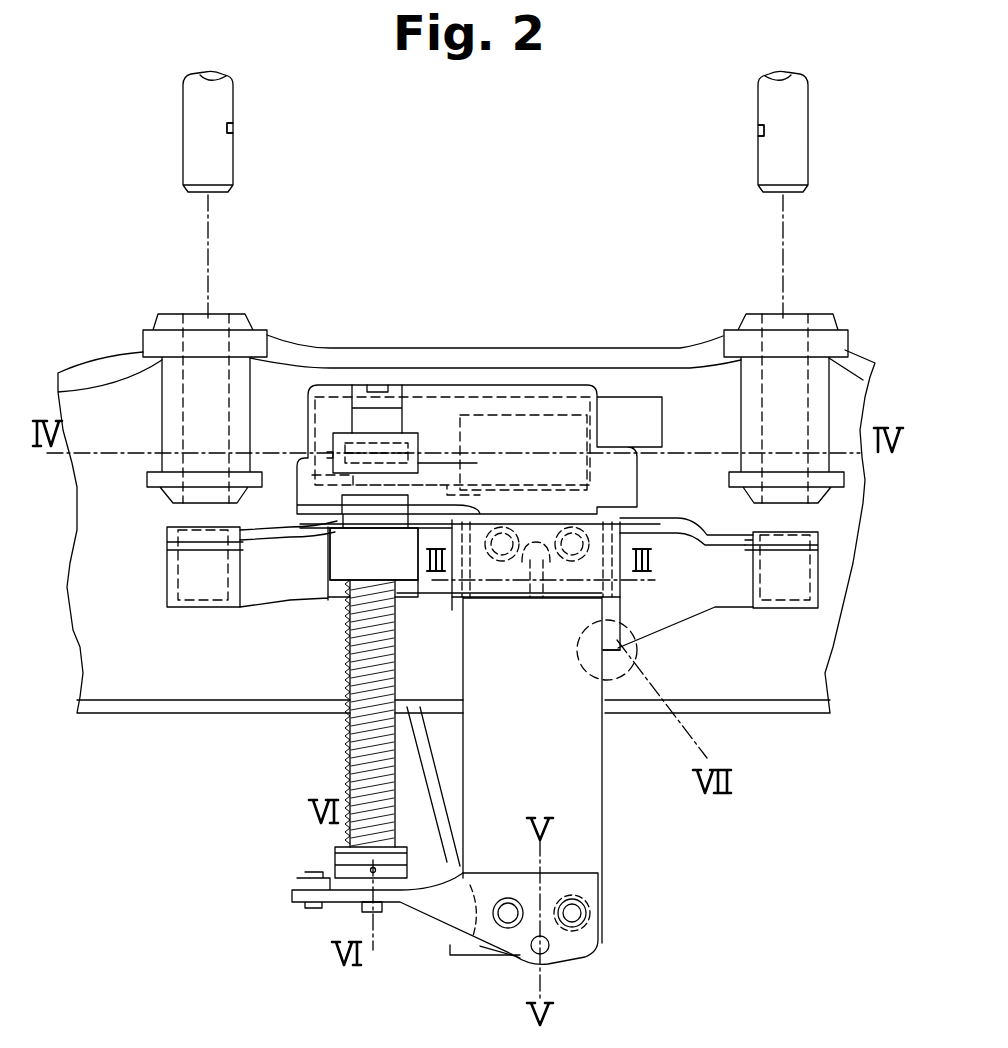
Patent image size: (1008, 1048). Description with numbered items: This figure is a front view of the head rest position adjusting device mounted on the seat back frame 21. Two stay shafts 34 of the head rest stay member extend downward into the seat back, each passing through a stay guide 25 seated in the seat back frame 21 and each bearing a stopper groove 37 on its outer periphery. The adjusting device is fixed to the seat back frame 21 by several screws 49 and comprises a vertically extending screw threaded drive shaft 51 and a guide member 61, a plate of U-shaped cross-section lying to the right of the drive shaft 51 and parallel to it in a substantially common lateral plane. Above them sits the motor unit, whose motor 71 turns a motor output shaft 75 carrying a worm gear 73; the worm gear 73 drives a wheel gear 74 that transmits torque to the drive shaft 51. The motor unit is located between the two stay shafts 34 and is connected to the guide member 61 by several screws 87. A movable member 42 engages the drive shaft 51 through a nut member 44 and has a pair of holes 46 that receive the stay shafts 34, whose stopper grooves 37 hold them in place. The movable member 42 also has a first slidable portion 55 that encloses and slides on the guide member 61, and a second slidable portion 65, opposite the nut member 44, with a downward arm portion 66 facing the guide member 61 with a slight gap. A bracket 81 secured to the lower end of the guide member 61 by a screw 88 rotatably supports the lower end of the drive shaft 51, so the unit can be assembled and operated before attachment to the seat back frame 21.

The seat back frame 21 is at (672, 378).
The stay guide 25 is at (246, 318).
The stay shaft 34 is at (250, 160).
The stopper groove 37 is at (233, 128).
The movable member 42 is at (267, 590).
The nut member 44 is at (345, 565).
The hole 46 is at (193, 588).
The screw 49 is at (505, 920).
The drive shaft 51 is at (355, 773).
The first slidable portion 55 is at (553, 605).
The guide member 61 is at (580, 848).
The second slidable portion 65 is at (613, 660).
The arm portion 66 is at (628, 640).
The motor 71 is at (528, 420).
The worm gear 73 is at (385, 448).
The wheel gear 74 is at (410, 450).
The motor output shaft 75 is at (440, 450).
The bracket 81 is at (435, 915).
The screw 87 is at (572, 540).
The screw 88 is at (576, 913).